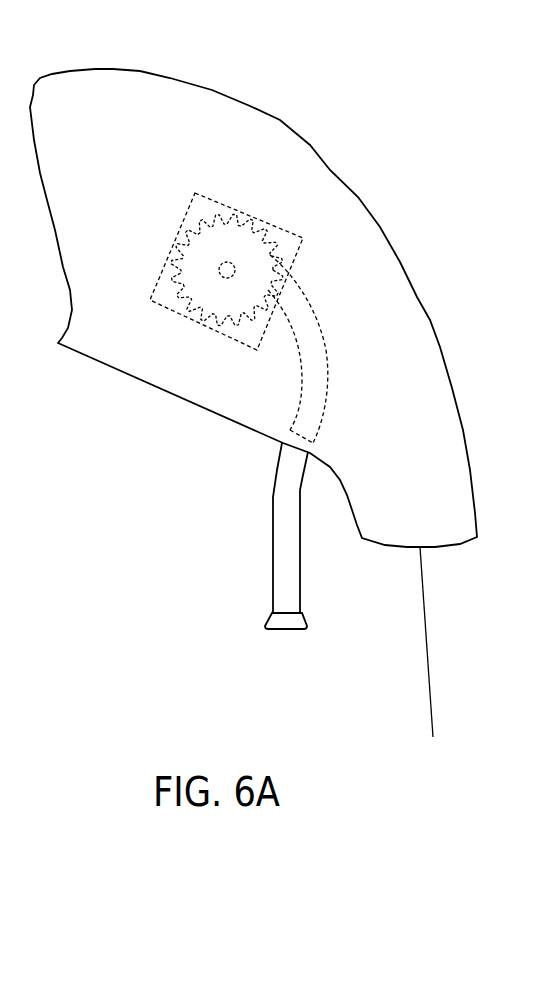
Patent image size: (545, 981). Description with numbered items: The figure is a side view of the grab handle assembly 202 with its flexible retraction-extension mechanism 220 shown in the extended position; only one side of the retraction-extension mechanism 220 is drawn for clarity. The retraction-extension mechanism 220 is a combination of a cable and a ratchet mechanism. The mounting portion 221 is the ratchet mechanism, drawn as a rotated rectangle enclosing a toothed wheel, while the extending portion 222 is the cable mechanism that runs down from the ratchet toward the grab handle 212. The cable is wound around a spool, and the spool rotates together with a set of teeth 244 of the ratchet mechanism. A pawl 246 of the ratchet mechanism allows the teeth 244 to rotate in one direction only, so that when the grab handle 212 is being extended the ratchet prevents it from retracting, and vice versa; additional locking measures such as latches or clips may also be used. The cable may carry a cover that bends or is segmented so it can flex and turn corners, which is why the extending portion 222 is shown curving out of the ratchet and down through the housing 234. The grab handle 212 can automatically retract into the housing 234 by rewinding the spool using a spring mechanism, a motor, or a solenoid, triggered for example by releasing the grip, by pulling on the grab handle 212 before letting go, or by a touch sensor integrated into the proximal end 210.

The grab handle assembly 202 is at (333, 109).
The flexible retraction-extension mechanism 220 is at (207, 276).
The mounting portion 221 is at (150, 293).
The set of teeth 244 is at (197, 240).
The pawl 246 is at (180, 237).
The extending portion 222 is at (272, 515).
The housing 234 is at (300, 557).
The grab handle 212 is at (306, 620).
The proximal end 210 is at (289, 571).